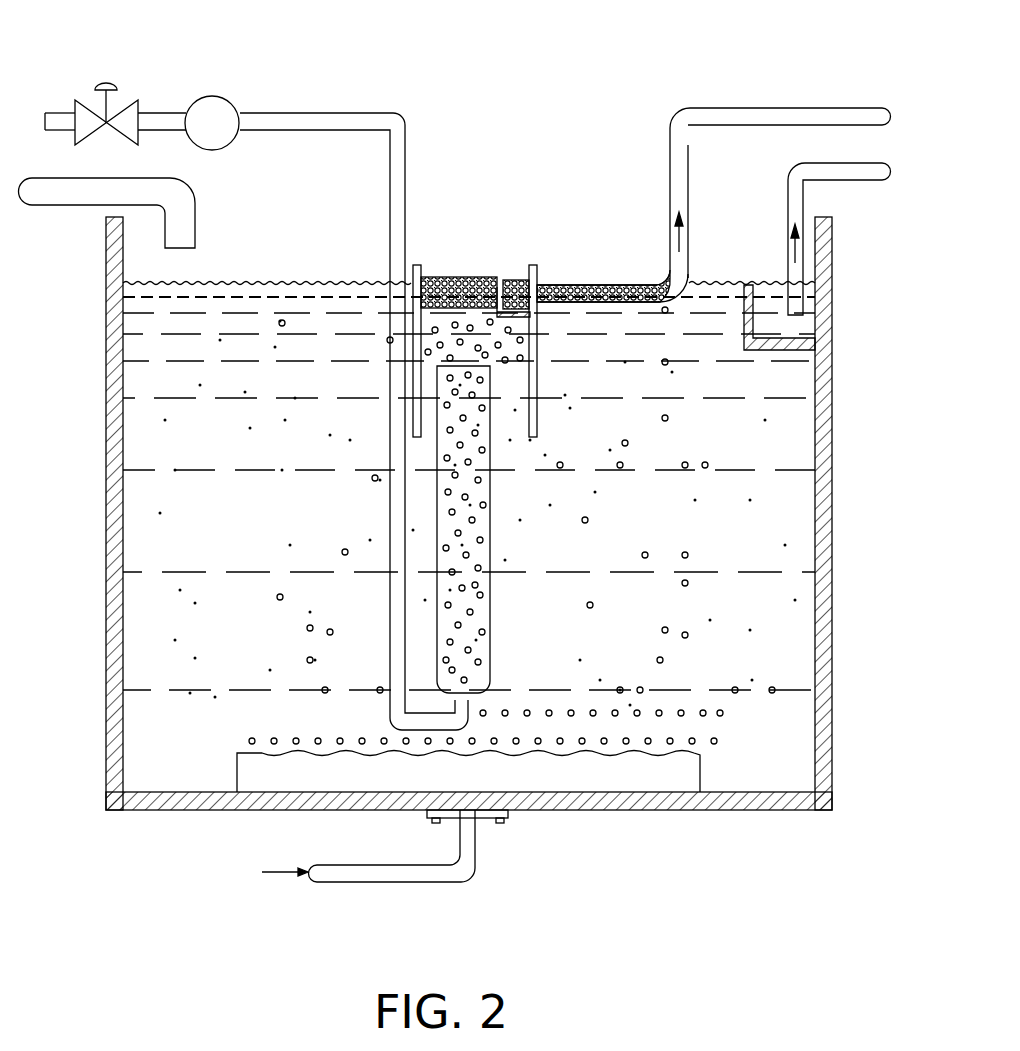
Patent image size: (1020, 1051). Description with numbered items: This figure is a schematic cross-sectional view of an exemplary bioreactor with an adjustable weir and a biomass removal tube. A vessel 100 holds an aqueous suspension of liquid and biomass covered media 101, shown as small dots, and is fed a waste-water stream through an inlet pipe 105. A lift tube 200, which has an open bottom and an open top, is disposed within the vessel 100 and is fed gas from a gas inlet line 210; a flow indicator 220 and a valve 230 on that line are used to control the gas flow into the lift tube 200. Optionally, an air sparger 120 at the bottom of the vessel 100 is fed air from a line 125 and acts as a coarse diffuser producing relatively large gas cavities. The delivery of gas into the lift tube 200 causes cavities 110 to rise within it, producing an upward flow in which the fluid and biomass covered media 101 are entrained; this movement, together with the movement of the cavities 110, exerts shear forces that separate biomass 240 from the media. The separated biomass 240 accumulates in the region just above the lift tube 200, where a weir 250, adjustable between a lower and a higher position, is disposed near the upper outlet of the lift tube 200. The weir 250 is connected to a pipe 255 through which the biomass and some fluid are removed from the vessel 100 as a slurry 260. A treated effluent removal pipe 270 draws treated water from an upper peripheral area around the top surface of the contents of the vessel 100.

The vessel 100 is at (833, 763).
The biomass covered media 101 is at (182, 555).
The inlet pipe 105 is at (74, 190).
The cavities 110 is at (188, 512).
The air sparger 120 is at (583, 773).
The line 125 is at (472, 839).
The lift tube 200 is at (490, 567).
The gas inlet line 210 is at (404, 128).
The flow indicator 220 is at (216, 98).
The valve 230 is at (104, 80).
The biomass 240 is at (480, 278).
The weir 250 is at (537, 380).
The pipe 255 is at (818, 118).
The slurry 260 is at (608, 283).
The treated effluent removal pipe 270 is at (865, 172).